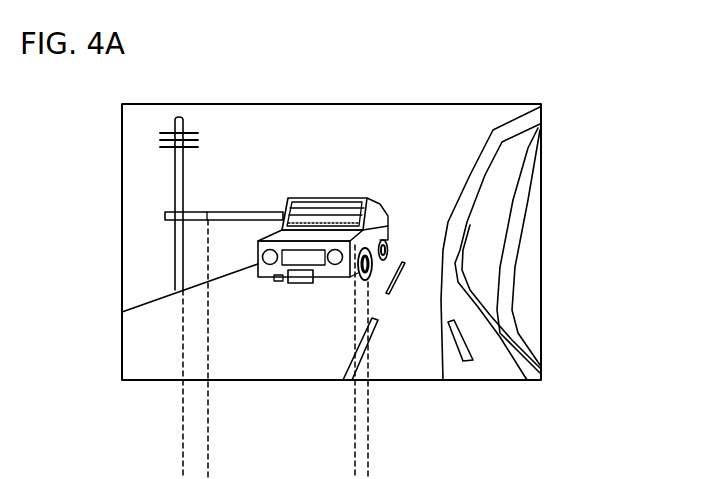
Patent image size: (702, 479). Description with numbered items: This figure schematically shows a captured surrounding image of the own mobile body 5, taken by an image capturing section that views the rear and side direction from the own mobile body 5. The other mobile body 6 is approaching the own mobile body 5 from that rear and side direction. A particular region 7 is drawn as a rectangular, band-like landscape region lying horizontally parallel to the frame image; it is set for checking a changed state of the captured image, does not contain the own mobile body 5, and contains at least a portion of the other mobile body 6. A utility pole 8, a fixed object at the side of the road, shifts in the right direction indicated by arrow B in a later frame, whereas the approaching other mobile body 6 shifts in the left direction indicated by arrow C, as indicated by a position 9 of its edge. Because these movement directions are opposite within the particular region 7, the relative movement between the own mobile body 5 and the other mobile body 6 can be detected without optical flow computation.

The own mobile body 5 is at (536, 261).
The other mobile body 6 is at (375, 193).
The particular region 7 is at (229, 198).
The utility pole 8 is at (175, 186).
The position of a left edge of the other mobile body 9 is at (368, 217).
The arrow B is at (200, 474).
The arrow C is at (363, 475).